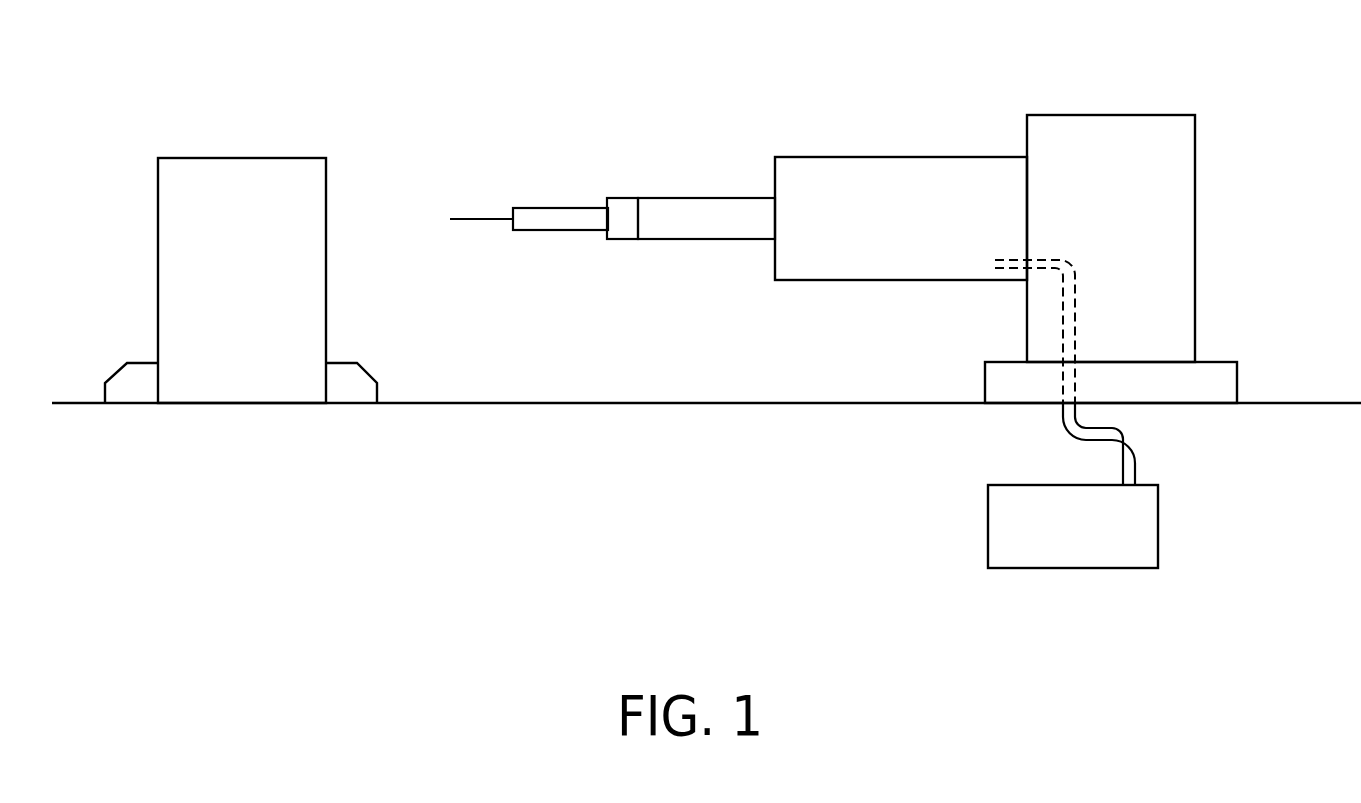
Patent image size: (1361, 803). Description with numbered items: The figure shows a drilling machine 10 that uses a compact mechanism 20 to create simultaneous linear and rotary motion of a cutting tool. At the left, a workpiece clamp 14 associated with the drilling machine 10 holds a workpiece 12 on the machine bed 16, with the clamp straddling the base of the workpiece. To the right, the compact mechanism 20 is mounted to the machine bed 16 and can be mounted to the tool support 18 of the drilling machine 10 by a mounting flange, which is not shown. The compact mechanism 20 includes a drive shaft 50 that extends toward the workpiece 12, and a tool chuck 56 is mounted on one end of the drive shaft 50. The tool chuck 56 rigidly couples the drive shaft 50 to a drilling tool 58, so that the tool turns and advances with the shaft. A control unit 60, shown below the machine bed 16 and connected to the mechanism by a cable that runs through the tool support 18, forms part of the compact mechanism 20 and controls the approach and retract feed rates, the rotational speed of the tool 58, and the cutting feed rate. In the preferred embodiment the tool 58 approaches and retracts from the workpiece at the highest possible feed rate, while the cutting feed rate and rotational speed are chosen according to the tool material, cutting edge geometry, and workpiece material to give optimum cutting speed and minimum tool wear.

The drilling machine 10 is at (477, 430).
The workpiece 12 is at (242, 158).
The workpiece clamp 14 is at (118, 373).
The machine bed 16 is at (1290, 402).
The tool support 18 is at (1102, 115).
The compact mechanism 20 is at (900, 157).
The drive shaft 50 is at (703, 195).
The tool chuck 56 is at (614, 195).
The drilling tool 58 is at (556, 207).
The control unit 60 is at (1157, 527).